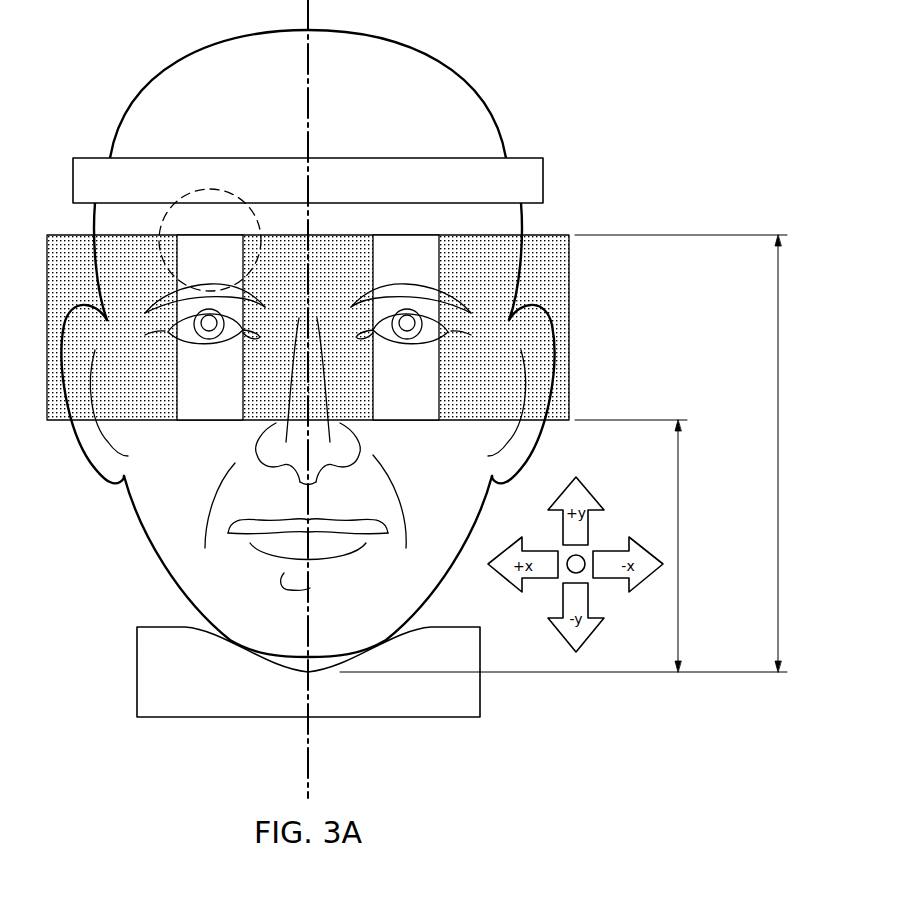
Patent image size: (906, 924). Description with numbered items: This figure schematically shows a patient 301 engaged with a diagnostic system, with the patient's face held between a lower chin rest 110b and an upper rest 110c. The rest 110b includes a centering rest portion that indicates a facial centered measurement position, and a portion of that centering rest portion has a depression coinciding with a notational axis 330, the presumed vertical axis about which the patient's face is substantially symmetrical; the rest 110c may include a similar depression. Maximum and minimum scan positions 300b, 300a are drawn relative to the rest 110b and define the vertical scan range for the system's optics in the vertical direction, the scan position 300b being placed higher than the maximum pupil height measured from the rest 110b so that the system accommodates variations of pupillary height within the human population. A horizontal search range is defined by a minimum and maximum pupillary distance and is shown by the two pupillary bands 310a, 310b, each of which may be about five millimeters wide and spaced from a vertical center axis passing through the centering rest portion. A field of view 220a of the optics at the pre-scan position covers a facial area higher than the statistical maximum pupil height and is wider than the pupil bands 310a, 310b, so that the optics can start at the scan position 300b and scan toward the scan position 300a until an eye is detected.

The patient 301 is at (190, 57).
The field of view 220a is at (211, 190).
The rest 110c is at (543, 181).
The pupillary band 310a is at (207, 421).
The pupillary band 310b is at (408, 421).
The rest 110b is at (137, 672).
The notational axis 330 is at (308, 729).
The scan position 300a is at (678, 545).
The scan position 300b is at (778, 453).